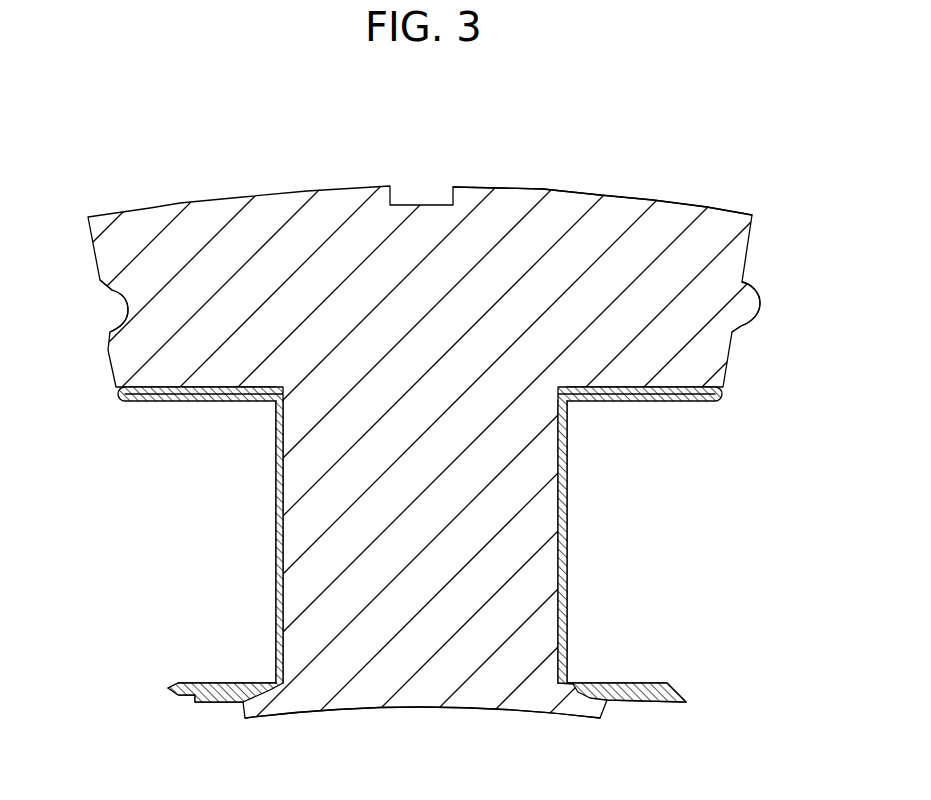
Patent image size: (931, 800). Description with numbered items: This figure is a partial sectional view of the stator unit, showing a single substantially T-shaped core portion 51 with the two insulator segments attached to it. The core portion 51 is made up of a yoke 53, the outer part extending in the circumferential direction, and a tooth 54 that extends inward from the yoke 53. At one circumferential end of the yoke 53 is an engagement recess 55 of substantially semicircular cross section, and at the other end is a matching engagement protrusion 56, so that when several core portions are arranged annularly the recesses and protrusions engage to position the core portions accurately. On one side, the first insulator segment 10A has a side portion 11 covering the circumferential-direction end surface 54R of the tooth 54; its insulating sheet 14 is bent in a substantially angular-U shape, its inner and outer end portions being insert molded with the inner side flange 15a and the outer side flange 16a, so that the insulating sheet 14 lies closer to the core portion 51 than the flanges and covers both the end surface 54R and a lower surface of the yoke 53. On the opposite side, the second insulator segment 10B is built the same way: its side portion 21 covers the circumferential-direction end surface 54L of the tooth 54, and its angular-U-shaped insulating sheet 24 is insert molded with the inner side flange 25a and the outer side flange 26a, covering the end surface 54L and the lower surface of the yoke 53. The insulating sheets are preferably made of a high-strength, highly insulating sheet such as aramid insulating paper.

The first insulator segment 10A is at (681, 580).
The second insulator segment 10B is at (164, 581).
The side portion 11 is at (565, 565).
The insulating sheet 14 is at (565, 437).
The inner side flange 15a is at (633, 703).
The outer side flange 16a is at (698, 403).
The side portion 21 is at (275, 578).
The insulating sheet 24 is at (275, 438).
The inner side flange 25a is at (210, 695).
The outer side flange 26a is at (140, 397).
The core portion 51 is at (505, 180).
The yoke 53 is at (615, 218).
The tooth 54 is at (462, 653).
The circumferential-direction end surface 54L is at (275, 495).
The circumferential-direction end surface 54R is at (565, 490).
The engagement recess 55 is at (122, 302).
The engagement protrusion 56 is at (750, 305).